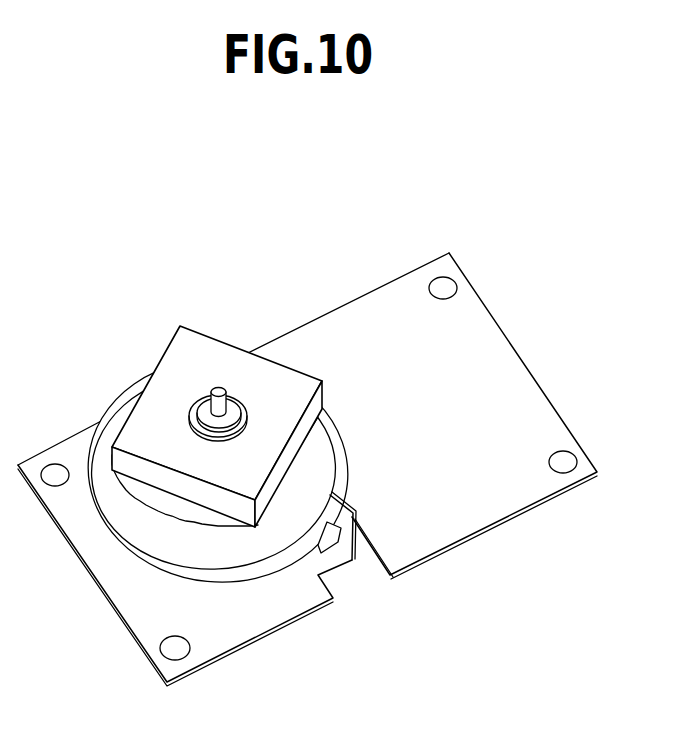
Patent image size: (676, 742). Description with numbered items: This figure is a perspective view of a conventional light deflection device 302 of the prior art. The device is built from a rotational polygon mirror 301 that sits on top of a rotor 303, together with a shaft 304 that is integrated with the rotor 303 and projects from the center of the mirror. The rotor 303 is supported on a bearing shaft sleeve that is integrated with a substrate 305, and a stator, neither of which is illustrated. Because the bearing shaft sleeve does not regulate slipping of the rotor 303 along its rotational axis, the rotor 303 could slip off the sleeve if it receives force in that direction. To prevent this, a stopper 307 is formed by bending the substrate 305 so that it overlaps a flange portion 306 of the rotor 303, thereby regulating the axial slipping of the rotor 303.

The rotational polygon mirror 301 is at (220, 362).
The light deflection device 302 is at (314, 248).
The rotor 303 is at (145, 530).
The shaft 304 is at (217, 390).
The substrate 305 is at (487, 485).
The flange portion 306 is at (262, 567).
The stopper 307 is at (345, 537).